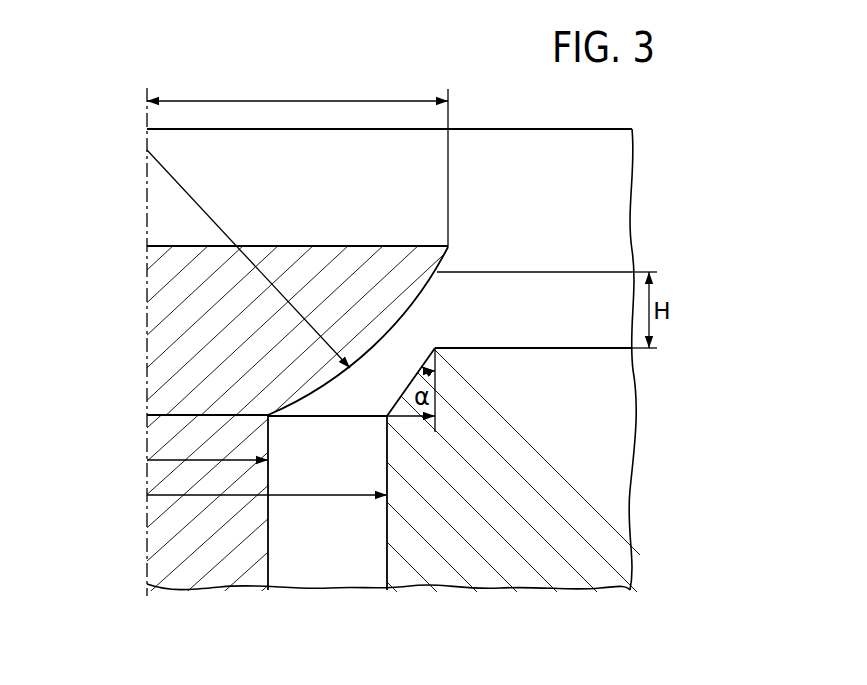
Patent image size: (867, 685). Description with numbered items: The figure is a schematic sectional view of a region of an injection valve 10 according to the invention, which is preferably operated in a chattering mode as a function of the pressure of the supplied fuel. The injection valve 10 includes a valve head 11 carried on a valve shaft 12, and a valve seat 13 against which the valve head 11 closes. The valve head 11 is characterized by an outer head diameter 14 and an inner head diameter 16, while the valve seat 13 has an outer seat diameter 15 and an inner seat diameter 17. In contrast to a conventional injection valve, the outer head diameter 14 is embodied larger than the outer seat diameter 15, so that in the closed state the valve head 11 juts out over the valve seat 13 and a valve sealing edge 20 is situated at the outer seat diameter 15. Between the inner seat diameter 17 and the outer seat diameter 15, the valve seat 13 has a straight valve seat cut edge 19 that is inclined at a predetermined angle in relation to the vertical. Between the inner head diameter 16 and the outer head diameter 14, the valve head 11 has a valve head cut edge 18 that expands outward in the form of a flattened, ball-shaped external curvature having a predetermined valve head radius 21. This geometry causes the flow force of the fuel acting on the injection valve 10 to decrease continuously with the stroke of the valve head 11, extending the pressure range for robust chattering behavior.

The injection valve 10 is at (108, 135).
The valve head 11 is at (163, 289).
The valve shaft 12 is at (185, 572).
The valve seat 13 is at (563, 572).
The outer head diameter 14 is at (297, 86).
The outer seat diameter 15 is at (167, 429).
The inner head diameter 16 is at (192, 462).
The inner seat diameter 17 is at (230, 497).
The valve head cut edge 18 is at (297, 397).
The valve seat cut edge 19 is at (437, 370).
The valve sealing edge 20 is at (443, 354).
The valve head radius 21 is at (195, 204).